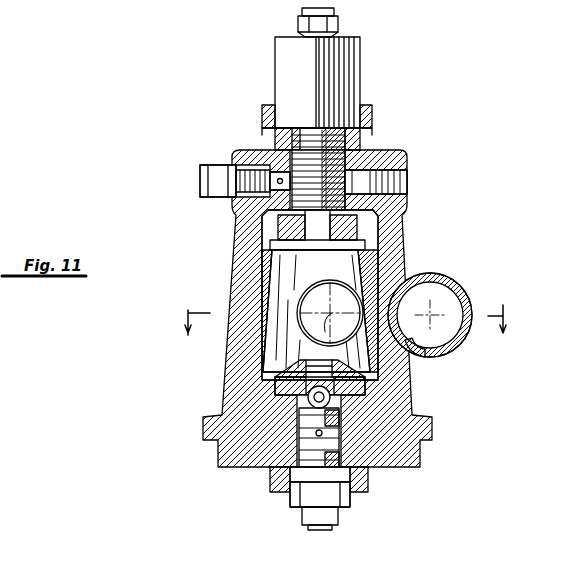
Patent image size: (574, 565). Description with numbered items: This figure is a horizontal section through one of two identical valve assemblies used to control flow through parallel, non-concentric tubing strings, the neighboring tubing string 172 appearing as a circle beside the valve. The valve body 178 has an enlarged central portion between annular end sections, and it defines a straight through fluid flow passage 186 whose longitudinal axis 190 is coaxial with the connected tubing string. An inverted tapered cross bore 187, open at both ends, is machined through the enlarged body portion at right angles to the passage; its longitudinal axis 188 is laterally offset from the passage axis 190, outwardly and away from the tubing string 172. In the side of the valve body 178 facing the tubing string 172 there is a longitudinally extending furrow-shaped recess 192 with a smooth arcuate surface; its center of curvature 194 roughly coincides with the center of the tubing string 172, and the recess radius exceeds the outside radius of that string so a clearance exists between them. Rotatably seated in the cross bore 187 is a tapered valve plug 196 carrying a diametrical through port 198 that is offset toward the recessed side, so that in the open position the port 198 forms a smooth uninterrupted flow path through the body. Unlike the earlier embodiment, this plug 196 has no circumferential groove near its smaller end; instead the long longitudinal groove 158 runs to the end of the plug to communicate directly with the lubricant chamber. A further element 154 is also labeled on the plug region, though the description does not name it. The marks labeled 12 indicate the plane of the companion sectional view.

The section line 12— 12 is at (344, 306).
The tapered plug 154 is at (306, 292).
The long longitudinal groove 158 is at (400, 283).
The tubing string 172 is at (447, 302).
The valve body 178 is at (232, 276).
The fluid flow passage 186 is at (352, 280).
The inverted tapered cross bore 187 is at (272, 262).
The longitudinal axis of cross bore 188 is at (306, 366).
The longitudinal axis of passage 190 is at (334, 313).
The furrow-shaped recess 192 is at (428, 354).
The center of curvature of recess 194 is at (430, 318).
The tapered valve plug 196 is at (382, 262).
The diametrical through port 198 is at (327, 340).